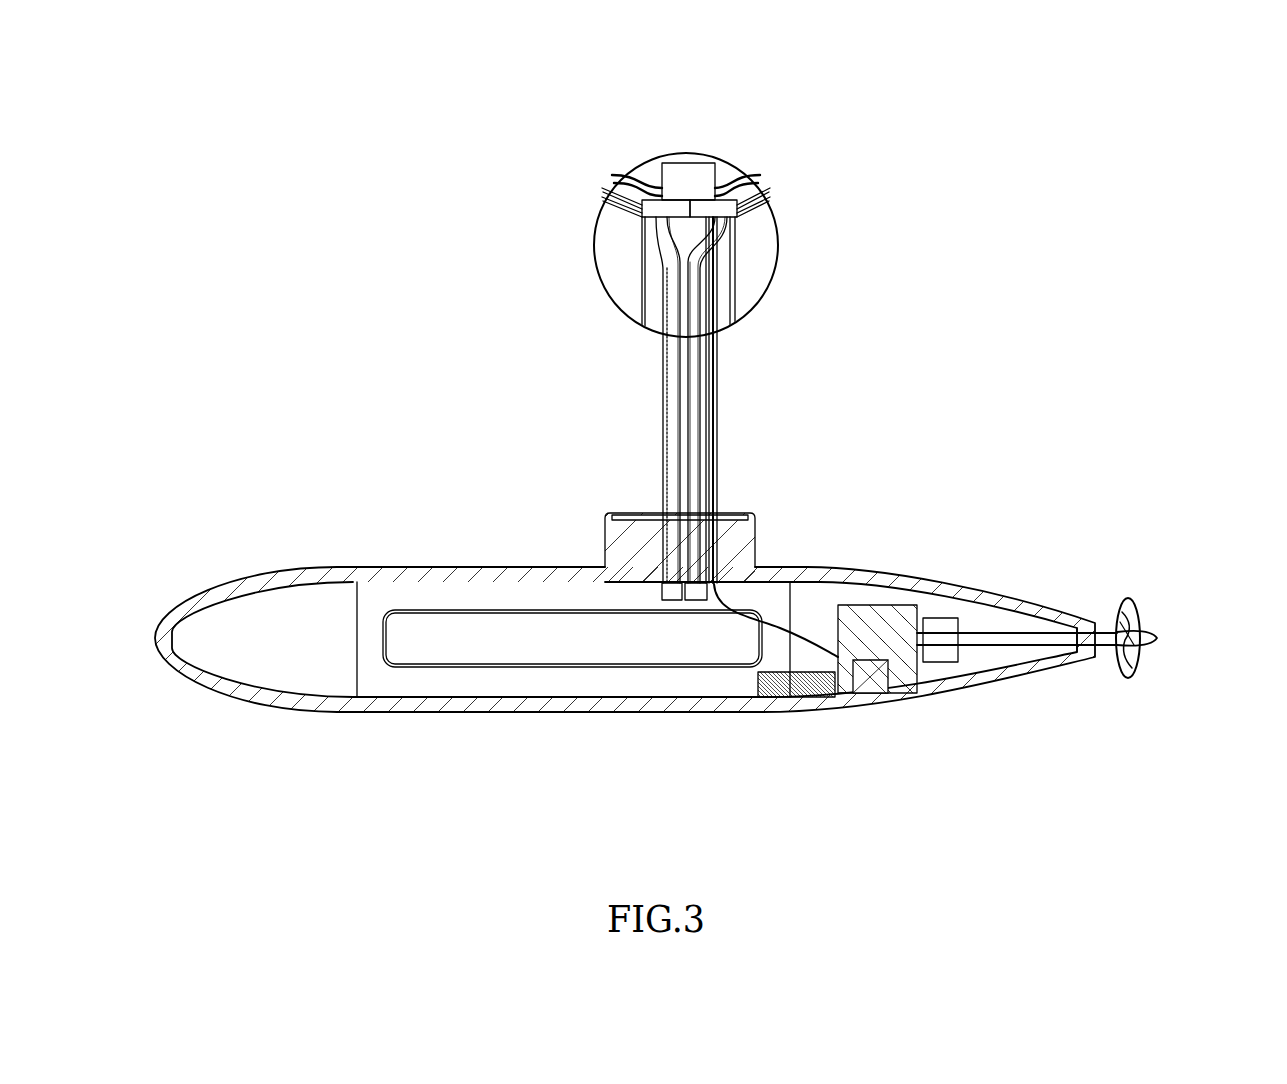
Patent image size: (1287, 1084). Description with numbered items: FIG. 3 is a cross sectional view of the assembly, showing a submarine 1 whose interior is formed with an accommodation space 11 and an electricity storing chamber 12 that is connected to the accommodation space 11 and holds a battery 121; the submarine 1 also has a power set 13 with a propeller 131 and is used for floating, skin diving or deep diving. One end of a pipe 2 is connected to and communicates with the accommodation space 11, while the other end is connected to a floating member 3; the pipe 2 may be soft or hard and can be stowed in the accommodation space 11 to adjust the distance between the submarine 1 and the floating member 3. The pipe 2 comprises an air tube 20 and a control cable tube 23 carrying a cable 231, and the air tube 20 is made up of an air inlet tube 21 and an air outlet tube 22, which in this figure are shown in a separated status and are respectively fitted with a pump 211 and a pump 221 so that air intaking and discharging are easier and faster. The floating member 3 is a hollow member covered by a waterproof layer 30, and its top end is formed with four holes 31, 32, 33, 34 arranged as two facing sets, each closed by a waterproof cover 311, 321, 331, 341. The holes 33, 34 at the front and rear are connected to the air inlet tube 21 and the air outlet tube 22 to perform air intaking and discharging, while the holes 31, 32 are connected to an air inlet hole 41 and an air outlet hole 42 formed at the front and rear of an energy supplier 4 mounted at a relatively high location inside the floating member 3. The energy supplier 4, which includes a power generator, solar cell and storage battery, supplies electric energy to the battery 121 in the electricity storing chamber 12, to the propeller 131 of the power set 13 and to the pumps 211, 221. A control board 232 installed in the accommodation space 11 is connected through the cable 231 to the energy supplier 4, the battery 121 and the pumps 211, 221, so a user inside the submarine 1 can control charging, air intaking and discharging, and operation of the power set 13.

The submarine 1 is at (268, 585).
The accommodation space 11 is at (335, 668).
The electricity storing chamber 12 is at (880, 605).
The battery 121 is at (880, 694).
The power set 13 is at (988, 620).
The propeller 131 is at (1133, 605).
The pipe 2 is at (532, 326).
The air tube 20 is at (550, 362).
The air inlet tube 21 is at (670, 460).
The pump 211 is at (605, 555).
The air outlet tube 22 is at (668, 382).
The pump 221 is at (757, 565).
The control cable tube 23 is at (716, 472).
The cable 231 is at (702, 418).
The control board 232 is at (778, 698).
The floating member 3 is at (935, 118).
The waterproof layer 30 is at (768, 292).
The hole 31 is at (640, 168).
The waterproof cover 311 is at (634, 172).
The hole 32 is at (740, 166).
The waterproof cover 321 is at (742, 170).
The hole 33 is at (603, 195).
The waterproof cover 331 is at (605, 206).
The hole 34 is at (772, 195).
The waterproof cover 341 is at (768, 206).
The energy supplier 4 is at (690, 160).
The air inlet hole 41 is at (628, 184).
The air outlet hole 42 is at (758, 188).